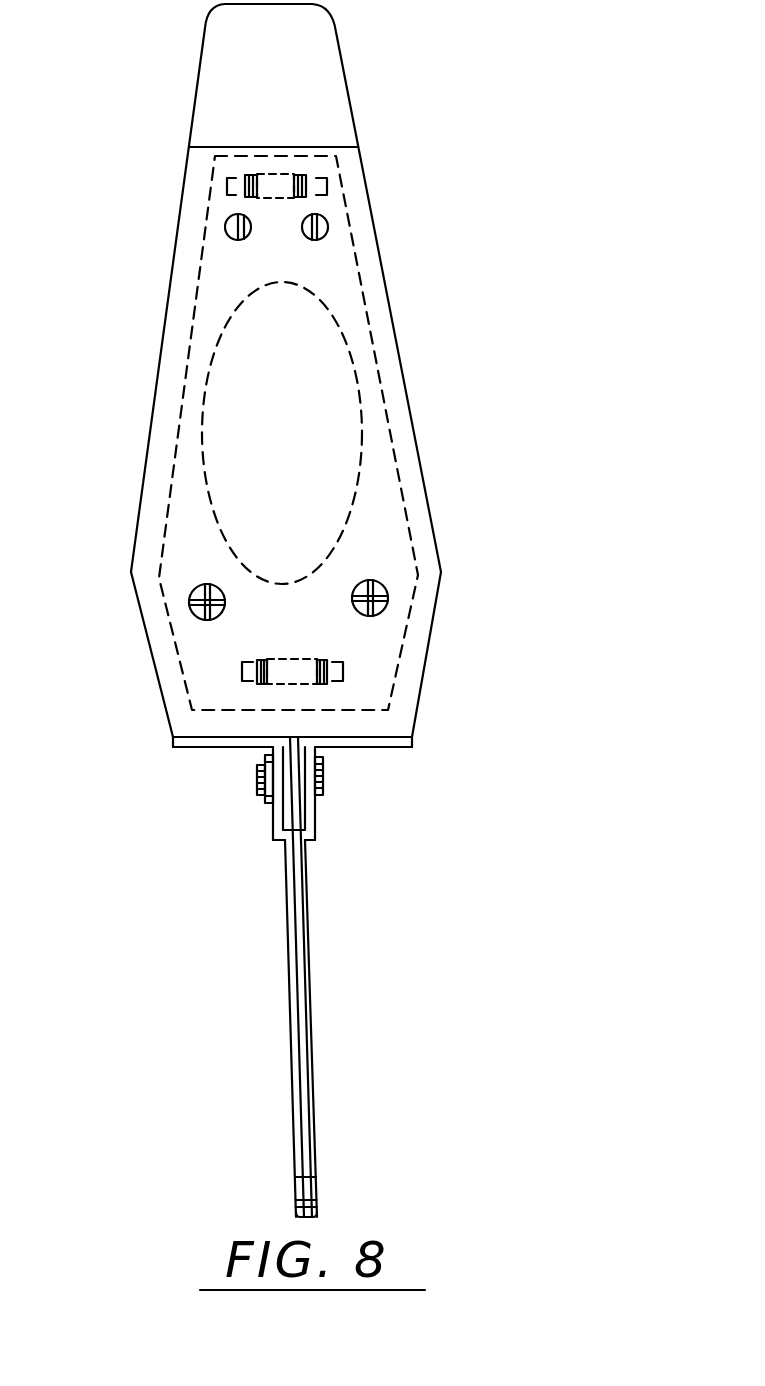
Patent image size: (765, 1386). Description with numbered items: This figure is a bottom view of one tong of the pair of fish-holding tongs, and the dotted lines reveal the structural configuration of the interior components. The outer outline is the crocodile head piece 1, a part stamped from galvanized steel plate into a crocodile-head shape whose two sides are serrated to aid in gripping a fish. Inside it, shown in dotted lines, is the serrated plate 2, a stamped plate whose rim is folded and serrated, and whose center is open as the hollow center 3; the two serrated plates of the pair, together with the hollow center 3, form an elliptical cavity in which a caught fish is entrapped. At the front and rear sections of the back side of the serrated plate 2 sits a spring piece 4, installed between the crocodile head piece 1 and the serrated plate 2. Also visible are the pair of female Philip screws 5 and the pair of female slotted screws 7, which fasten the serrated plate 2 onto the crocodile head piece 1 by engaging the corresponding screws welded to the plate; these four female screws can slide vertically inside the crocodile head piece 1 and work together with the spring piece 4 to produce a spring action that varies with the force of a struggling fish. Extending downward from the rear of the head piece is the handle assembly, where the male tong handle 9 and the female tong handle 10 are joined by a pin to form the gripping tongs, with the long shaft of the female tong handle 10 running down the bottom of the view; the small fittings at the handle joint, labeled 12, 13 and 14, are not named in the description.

The crocodile head piece 1 is at (320, 77).
The serrated plate 2 is at (372, 515).
The hollow center 3 is at (302, 365).
The spring piece 4 is at (273, 183).
The female Philip screw 5 is at (375, 596).
The female slotted screw 7 is at (320, 220).
The male tong handle 9 is at (398, 740).
The female tong handle 10 is at (303, 883).
The nut 12 is at (323, 778).
The housing 13 is at (258, 800).
The nut 14 is at (257, 773).